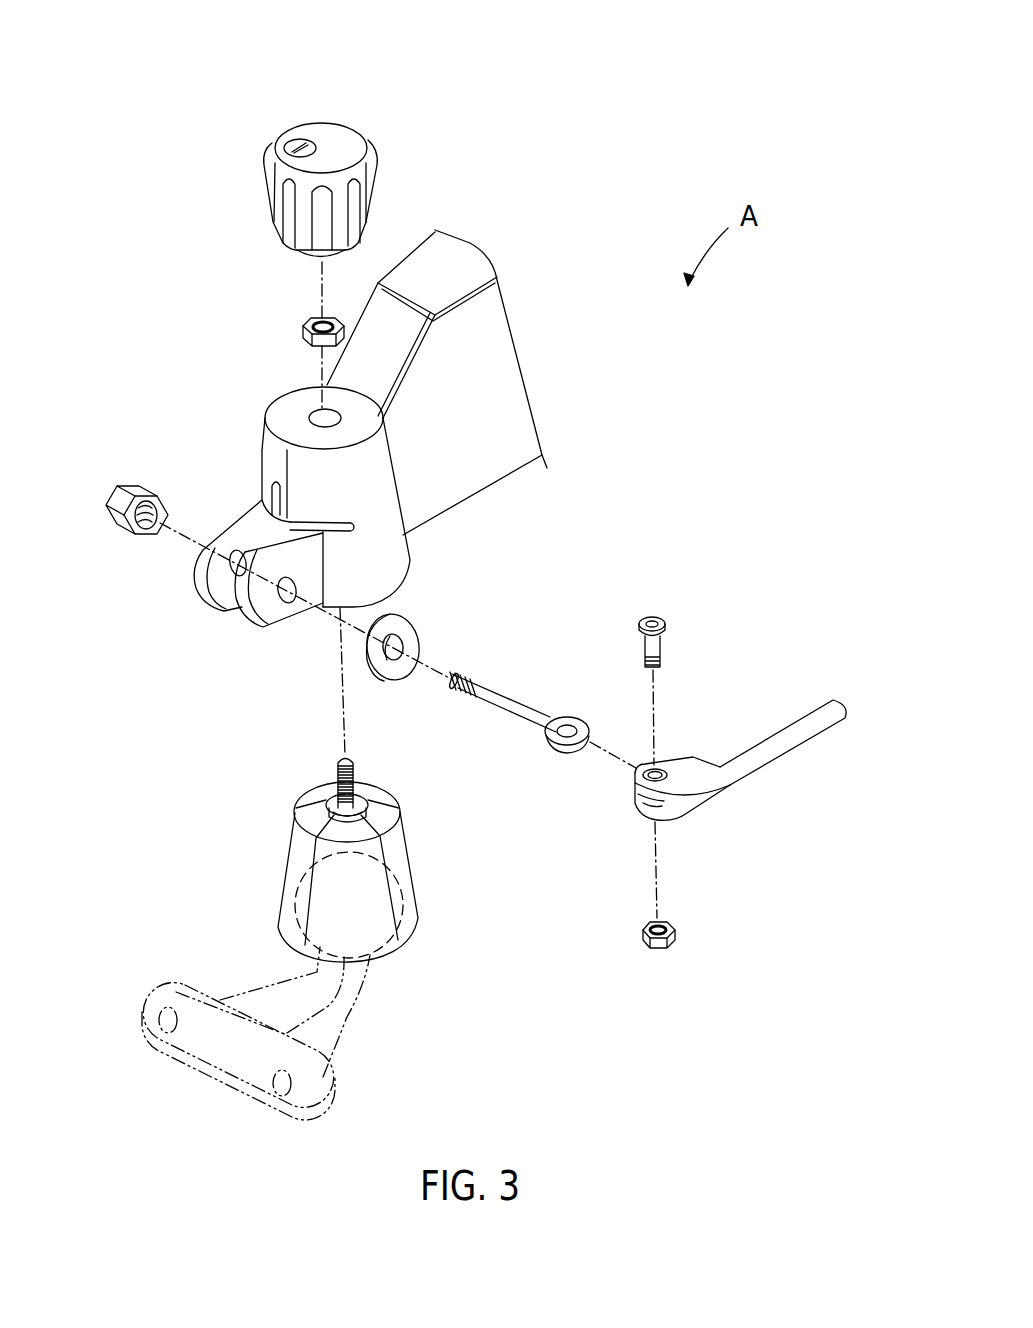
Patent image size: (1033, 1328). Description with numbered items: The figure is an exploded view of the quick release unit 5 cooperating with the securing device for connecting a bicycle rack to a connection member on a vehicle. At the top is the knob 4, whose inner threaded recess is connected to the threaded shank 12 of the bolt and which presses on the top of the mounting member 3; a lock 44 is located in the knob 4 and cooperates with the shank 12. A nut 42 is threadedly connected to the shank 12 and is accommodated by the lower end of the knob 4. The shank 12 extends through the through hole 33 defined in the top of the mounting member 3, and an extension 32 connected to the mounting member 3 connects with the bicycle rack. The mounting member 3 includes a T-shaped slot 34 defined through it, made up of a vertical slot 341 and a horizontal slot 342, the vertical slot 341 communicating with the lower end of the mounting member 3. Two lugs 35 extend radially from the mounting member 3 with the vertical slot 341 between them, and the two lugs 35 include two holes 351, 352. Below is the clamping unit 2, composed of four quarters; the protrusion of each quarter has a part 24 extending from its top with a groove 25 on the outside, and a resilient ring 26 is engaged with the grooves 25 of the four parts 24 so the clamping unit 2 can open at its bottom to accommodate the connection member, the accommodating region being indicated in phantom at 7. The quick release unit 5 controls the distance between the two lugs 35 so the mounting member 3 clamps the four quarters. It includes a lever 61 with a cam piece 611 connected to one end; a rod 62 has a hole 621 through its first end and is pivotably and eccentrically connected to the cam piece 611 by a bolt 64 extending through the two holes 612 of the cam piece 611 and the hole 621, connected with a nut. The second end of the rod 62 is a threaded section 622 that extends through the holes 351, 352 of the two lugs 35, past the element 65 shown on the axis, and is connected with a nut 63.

The clamping unit 2 is at (317, 896).
The mounting member 3 is at (261, 516).
The knob 4 is at (315, 141).
The quick release unit 5 is at (712, 769).
The hidden bore 7 is at (363, 908).
The shank 12 is at (336, 768).
The part 24 is at (328, 804).
The groove 25 is at (272, 824).
The resilient ring 26 is at (347, 805).
The extension 32 is at (492, 387).
The through hole 33 is at (320, 410).
The T-shaped slot 34 is at (233, 464).
The lugs 35 is at (219, 601).
The nut 42 is at (310, 318).
The lock 44 is at (296, 142).
The lever 61 is at (806, 730).
The rod 62 is at (486, 745).
The nut 63 is at (122, 496).
The bolt 64 is at (658, 650).
The washer 65 is at (414, 636).
The vertical slot 341 is at (265, 460).
The horizontal slot 342 is at (268, 478).
The hole 351 is at (286, 595).
The hole 352 is at (230, 567).
The cam piece 611 is at (650, 770).
The holes 612 is at (669, 740).
The hole 621 is at (563, 740).
The threaded section 622 is at (452, 690).